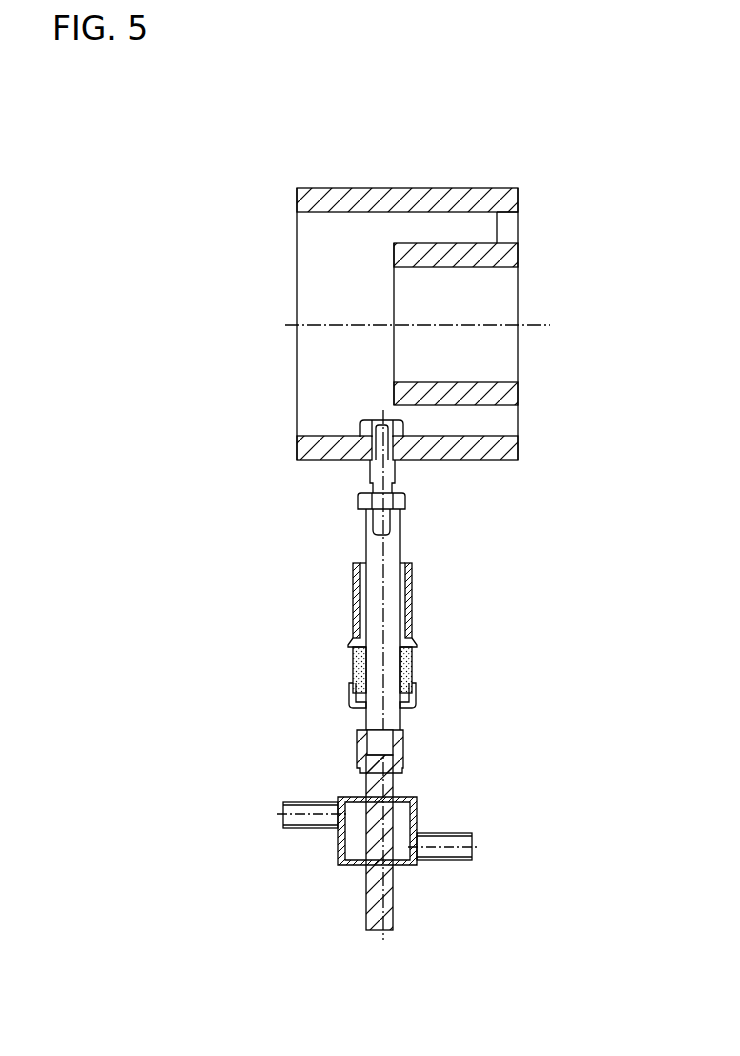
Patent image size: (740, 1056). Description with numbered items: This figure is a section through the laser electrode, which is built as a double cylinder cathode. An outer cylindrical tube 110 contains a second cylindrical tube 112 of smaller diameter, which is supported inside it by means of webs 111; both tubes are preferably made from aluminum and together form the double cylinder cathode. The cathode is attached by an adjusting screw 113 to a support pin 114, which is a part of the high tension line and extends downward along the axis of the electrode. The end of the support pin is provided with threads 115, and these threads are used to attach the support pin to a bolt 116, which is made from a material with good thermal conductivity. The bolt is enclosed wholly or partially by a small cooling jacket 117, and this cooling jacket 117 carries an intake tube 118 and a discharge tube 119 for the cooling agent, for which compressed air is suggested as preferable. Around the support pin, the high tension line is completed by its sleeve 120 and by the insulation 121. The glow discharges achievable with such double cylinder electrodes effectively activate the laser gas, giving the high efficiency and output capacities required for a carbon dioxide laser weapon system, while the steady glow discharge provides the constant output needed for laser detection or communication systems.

The cylindrical tube 110 is at (512, 200).
The webs 111 is at (508, 232).
The second cylindrical tube 112 is at (512, 393).
The adjusting screw 113 is at (386, 470).
The support pin 114 is at (387, 563).
The threads 115 is at (393, 743).
The bolt 116 is at (383, 803).
The cooling jacket 117 is at (417, 817).
The intake tube 118 is at (303, 827).
The discharge tube 119 is at (455, 860).
The sleeve 120 is at (405, 612).
The insulation 121 is at (402, 670).